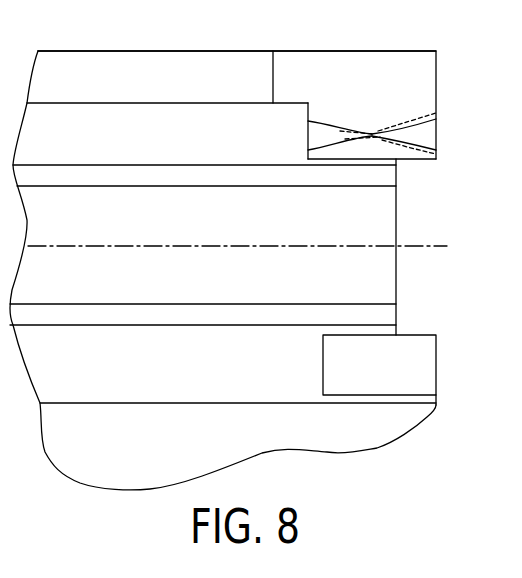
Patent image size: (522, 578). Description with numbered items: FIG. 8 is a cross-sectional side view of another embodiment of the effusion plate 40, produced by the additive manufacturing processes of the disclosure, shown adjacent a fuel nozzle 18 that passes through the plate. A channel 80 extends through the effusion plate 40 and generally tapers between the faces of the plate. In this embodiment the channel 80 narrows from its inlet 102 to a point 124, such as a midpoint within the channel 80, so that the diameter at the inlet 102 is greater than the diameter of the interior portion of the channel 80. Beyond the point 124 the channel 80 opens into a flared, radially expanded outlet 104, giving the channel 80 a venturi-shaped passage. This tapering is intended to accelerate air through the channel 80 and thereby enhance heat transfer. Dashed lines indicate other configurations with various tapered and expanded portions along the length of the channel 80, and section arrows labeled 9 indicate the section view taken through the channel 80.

The fuel nozzle 18 is at (218, 225).
The effusion plate 40 is at (410, 51).
The channel 80 is at (376, 133).
The inlet 102 is at (307, 136).
The outlet 104 is at (437, 137).
The point 124 is at (373, 135).
The section line 9- 9 is at (343, 135).